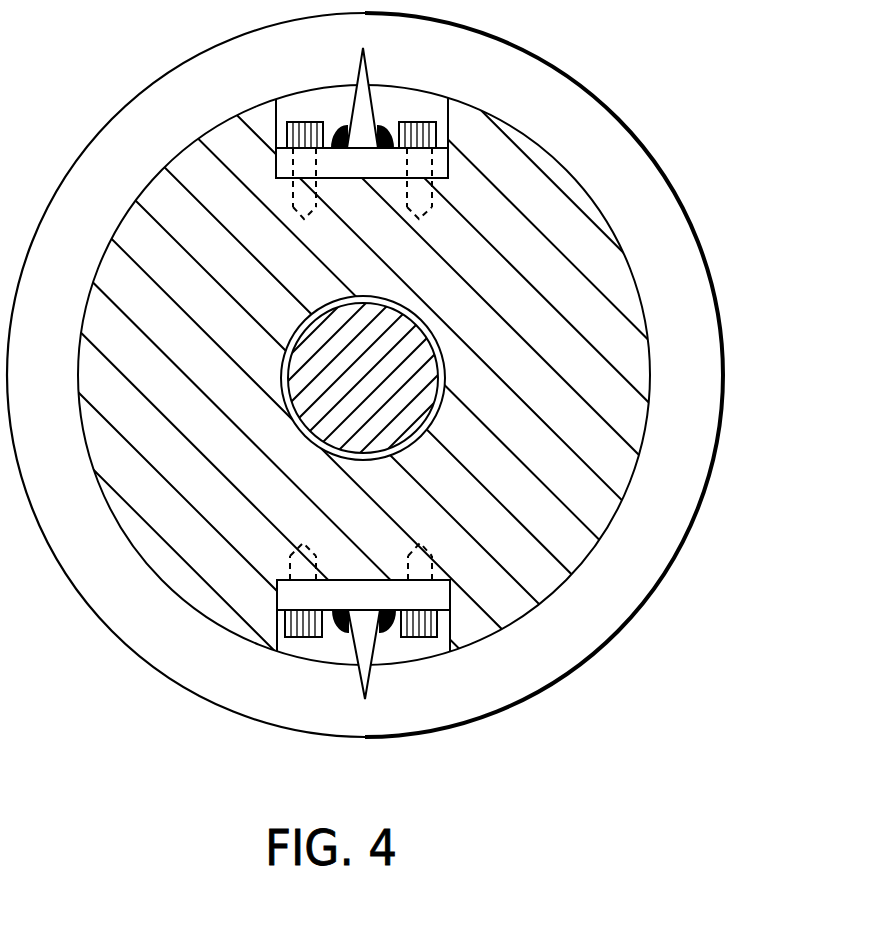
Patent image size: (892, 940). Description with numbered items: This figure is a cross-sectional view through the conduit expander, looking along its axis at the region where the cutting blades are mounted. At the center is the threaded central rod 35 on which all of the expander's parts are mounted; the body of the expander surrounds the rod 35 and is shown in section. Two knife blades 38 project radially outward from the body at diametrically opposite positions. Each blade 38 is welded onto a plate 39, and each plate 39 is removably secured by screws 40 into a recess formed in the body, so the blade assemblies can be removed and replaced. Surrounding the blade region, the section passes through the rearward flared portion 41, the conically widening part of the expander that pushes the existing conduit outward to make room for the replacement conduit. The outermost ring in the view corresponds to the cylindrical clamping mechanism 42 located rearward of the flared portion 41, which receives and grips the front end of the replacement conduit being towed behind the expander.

The central rod 35 is at (300, 383).
The knife blades 38 is at (374, 84).
The plates 39 is at (452, 602).
The screws 40 is at (295, 638).
The rearward flared portion 41 is at (658, 475).
The cylindrical clamping mechanism 42 is at (723, 390).